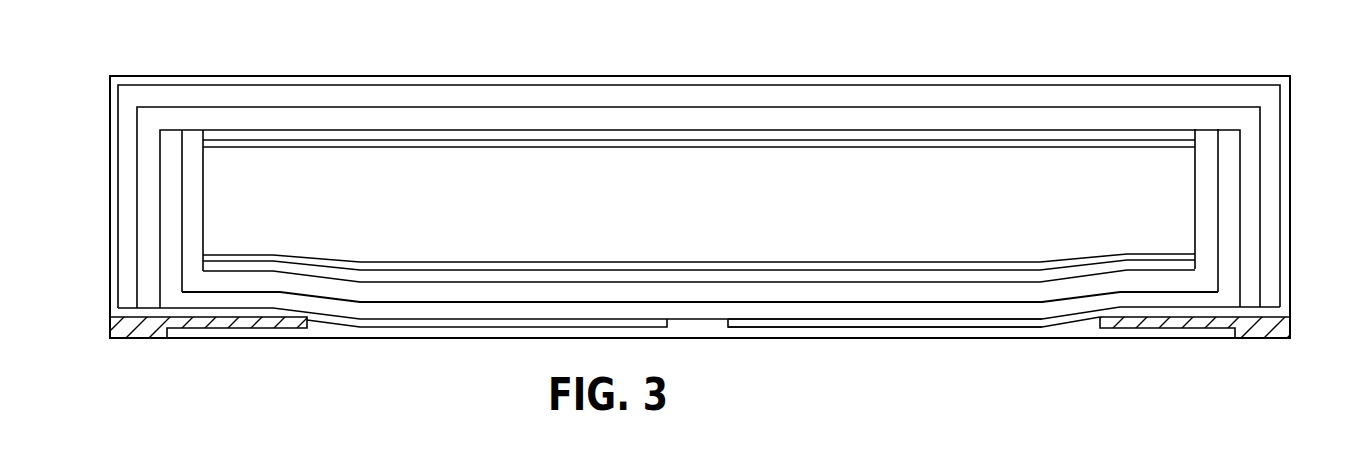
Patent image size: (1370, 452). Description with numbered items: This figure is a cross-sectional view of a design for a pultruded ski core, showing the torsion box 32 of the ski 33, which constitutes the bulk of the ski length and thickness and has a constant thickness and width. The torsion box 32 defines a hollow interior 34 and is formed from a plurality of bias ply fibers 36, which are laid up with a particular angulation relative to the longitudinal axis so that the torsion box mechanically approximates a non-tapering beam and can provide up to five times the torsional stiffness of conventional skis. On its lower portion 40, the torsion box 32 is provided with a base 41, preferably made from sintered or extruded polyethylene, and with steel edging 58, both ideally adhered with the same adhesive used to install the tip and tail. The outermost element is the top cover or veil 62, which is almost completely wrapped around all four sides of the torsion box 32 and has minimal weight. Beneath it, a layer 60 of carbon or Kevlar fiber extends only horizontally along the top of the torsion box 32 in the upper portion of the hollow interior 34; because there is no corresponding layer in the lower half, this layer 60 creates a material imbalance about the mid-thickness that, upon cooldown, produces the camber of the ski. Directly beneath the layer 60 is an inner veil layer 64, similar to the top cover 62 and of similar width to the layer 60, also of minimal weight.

The torsion box 32 is at (1162, 104).
The ski 33 is at (1283, 72).
The hollow interior 34 is at (798, 209).
The bias ply fibers 36 is at (470, 98).
The lower portion 40 is at (817, 308).
The base 41 is at (1083, 325).
The steel edging 58 is at (140, 322).
The layer 60 is at (1007, 133).
The top cover 62 is at (861, 74).
The inner veil layer 64 is at (958, 143).